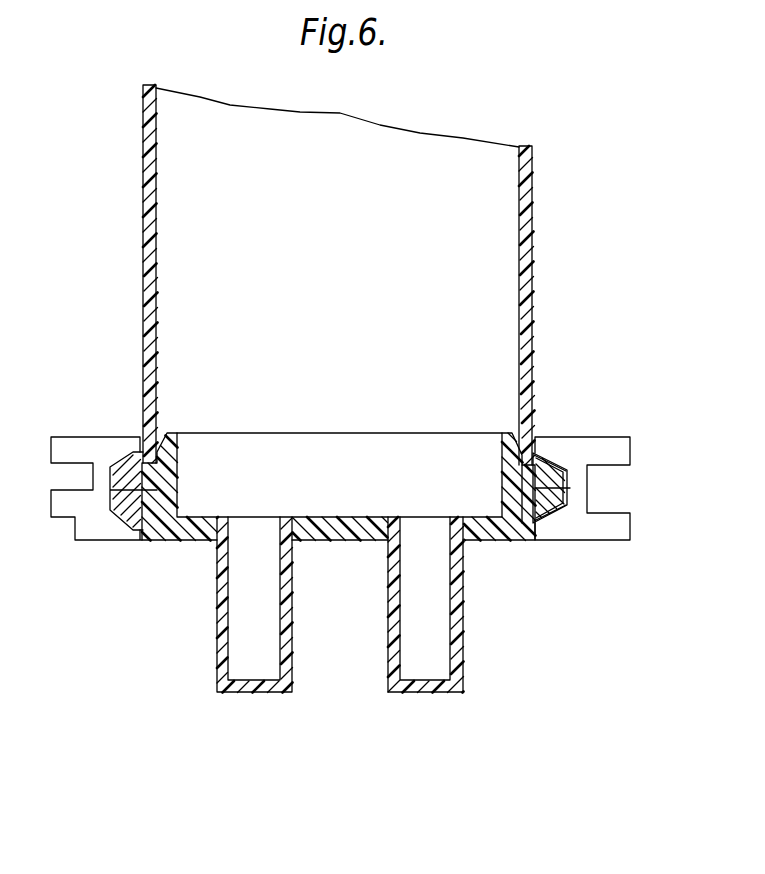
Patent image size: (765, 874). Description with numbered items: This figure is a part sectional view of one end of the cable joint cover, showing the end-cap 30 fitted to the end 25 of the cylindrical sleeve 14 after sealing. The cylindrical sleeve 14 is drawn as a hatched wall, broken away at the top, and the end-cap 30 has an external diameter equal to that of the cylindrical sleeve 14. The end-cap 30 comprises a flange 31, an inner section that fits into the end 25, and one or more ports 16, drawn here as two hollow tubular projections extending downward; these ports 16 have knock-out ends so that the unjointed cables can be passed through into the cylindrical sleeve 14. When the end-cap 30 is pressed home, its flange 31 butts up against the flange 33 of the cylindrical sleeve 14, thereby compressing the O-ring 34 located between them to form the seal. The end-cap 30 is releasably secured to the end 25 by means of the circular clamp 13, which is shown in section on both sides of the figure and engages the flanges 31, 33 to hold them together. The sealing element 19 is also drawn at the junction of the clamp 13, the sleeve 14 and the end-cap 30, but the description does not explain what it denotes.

The circular clamp 13 is at (82, 448).
The cylindrical sleeve 14 is at (144, 183).
The port 16 is at (247, 667).
The seal ring 19 is at (125, 458).
The end 25 is at (205, 420).
The end-cap 30 is at (206, 588).
The flange 31 is at (545, 527).
The flange 33 is at (550, 452).
The O-ring 34 is at (530, 490).